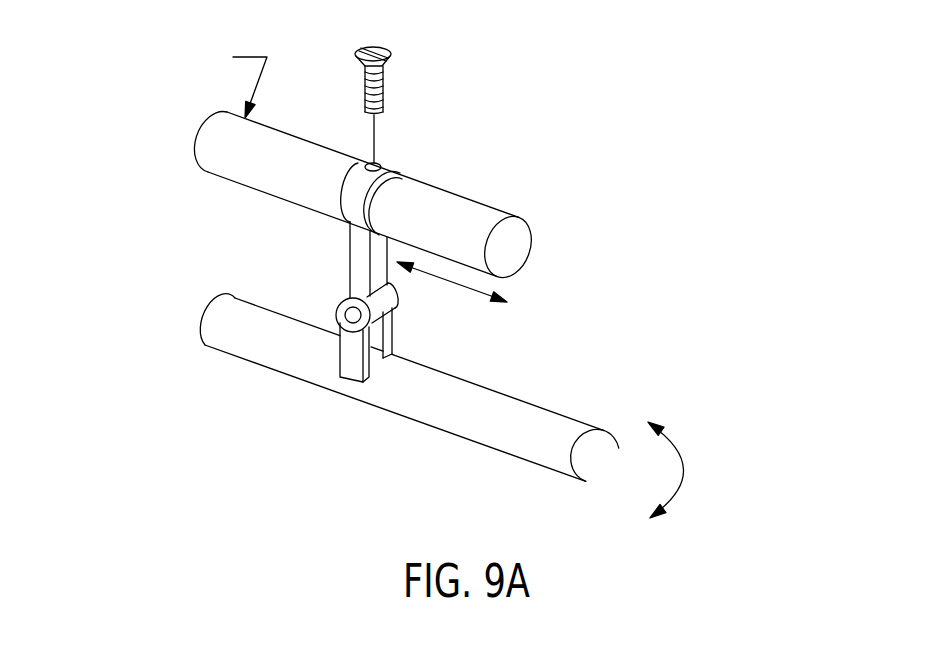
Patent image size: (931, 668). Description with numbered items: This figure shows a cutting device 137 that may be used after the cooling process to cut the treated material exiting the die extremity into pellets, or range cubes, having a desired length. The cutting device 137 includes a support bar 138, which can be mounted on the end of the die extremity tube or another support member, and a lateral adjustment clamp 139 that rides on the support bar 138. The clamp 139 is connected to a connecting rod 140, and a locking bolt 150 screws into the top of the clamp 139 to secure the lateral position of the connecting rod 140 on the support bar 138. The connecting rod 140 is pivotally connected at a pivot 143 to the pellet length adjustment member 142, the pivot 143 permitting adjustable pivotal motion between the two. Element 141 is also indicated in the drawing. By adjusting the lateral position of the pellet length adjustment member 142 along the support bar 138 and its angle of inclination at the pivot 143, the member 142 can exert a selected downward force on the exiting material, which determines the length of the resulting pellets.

The cutting device 137 is at (700, 222).
The support bar 138 is at (482, 200).
The lateral adjustment clamp 139 is at (335, 196).
The connecting rod 140 is at (349, 262).
The pivot pin 141 is at (408, 339).
The pellet length adjustment member 142 is at (536, 466).
The pivot 143 is at (375, 385).
The locking bolt 150 is at (392, 57).